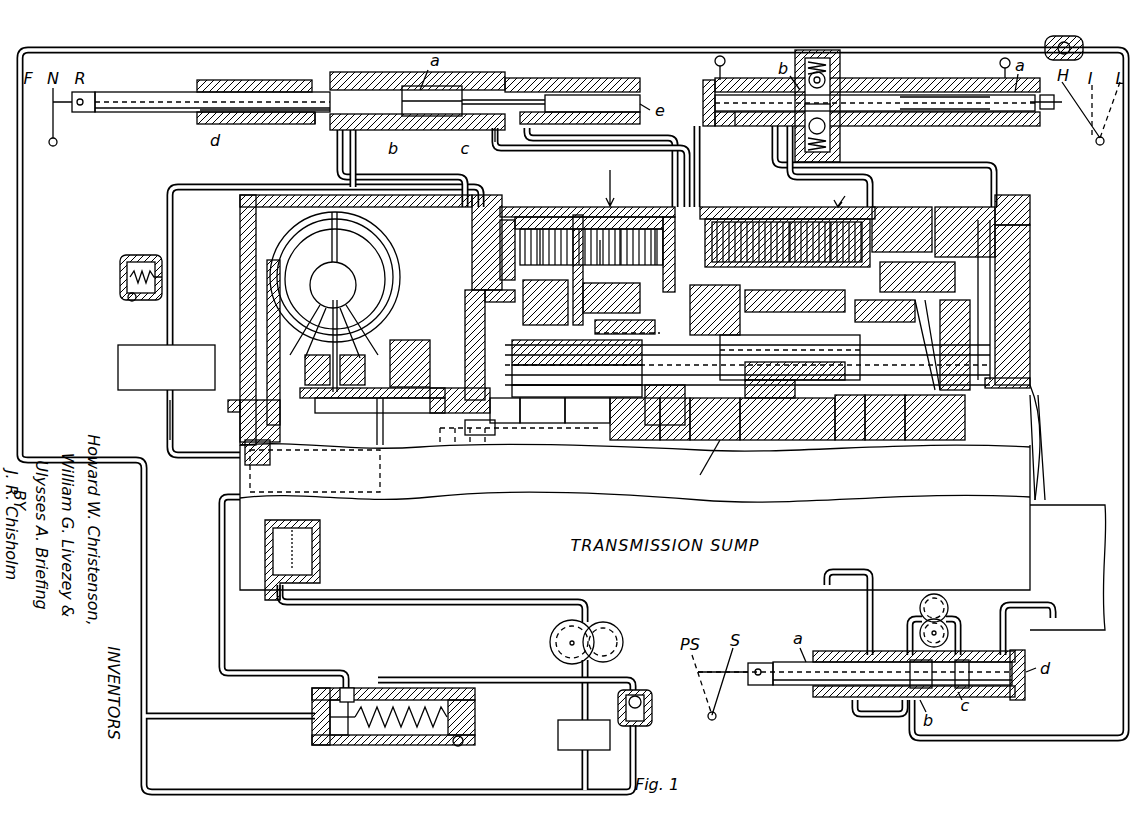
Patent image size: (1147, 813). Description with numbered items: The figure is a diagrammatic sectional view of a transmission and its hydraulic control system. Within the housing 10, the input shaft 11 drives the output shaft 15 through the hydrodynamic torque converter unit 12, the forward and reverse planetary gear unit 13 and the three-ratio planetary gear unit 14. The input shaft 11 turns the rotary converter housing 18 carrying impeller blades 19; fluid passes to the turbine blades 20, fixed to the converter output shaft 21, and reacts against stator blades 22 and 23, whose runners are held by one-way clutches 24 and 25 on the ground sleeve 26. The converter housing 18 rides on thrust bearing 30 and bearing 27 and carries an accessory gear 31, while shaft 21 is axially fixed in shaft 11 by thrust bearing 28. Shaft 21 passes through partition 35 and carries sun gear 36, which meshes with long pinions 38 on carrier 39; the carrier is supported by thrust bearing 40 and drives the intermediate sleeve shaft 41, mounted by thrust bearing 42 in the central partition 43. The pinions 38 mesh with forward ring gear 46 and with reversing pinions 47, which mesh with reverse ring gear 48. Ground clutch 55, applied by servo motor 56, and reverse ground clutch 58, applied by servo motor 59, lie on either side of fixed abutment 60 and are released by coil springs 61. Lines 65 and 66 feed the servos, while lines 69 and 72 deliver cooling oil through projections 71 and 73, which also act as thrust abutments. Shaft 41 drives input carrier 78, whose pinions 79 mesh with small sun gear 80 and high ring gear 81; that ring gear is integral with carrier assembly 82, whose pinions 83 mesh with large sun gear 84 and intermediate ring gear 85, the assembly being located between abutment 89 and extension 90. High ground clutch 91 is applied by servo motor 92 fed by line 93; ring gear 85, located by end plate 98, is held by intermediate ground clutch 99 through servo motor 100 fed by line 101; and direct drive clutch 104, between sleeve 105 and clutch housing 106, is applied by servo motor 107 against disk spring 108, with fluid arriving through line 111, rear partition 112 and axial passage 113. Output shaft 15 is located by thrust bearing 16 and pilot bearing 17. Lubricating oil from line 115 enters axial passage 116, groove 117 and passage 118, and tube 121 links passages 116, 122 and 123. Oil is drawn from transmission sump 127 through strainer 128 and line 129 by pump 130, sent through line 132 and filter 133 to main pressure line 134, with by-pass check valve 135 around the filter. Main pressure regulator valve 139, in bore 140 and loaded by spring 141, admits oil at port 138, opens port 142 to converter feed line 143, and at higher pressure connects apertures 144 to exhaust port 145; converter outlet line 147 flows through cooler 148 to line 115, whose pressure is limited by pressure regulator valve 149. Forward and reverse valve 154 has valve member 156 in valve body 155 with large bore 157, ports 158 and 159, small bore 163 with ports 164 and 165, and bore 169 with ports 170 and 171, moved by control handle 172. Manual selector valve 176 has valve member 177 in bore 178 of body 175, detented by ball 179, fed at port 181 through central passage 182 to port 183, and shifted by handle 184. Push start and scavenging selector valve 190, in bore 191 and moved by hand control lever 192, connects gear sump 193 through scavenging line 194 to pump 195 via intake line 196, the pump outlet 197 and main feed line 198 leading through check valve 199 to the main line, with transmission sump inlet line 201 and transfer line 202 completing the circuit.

The housing 10 is at (238, 250).
The input shaft 11 is at (240, 428).
The hydrodynamic torque converter unit 12 is at (385, 250).
The forward and reverse planetary gear unit 13 is at (612, 180).
The three-ratio planetary gear unit 14 is at (849, 195).
The output shaft 15 is at (1042, 392).
The thrust bearing 16 is at (1028, 380).
The pilot bearing 17 is at (713, 467).
The rotary torque converter housing 18 is at (300, 235).
The impeller blades 19 is at (390, 258).
The turbine blades 20 is at (276, 285).
The torque converter output shaft 21 is at (318, 450).
The stator blades 22 is at (308, 330).
The stator blades 23 is at (358, 330).
The one-way clutch 24 is at (308, 385).
The one-way clutch 25 is at (362, 385).
The ground sleeve 26 is at (325, 400).
The bearing 27 is at (226, 405).
The thrust bearing 28 is at (257, 460).
The thrust bearing 30 is at (400, 405).
The gear 31 is at (412, 340).
The partition 35 is at (470, 270).
The sun gear 36 is at (520, 425).
The long planetary pinions 38 is at (482, 435).
The carrier 39 is at (560, 425).
The thrust bearing 40 is at (470, 390).
The intermediate sleeve shaft 41 is at (595, 425).
The thrust bearing 42 is at (665, 405).
The central partition 43 is at (630, 375).
The forward ring gear 46 is at (520, 340).
The reversing planetary pinions 47 is at (635, 336).
The reverse ring gear 48 is at (575, 298).
The multiple plate ground clutch 55 is at (580, 218).
The servo motor 56 is at (512, 208).
The reverse ground clutch 58 is at (620, 218).
The servo motor 59 is at (658, 218).
The fixed abutment 60 is at (600, 210).
The coil springs 61 is at (545, 218).
The line 65 is at (336, 168).
The line 66 is at (684, 165).
The line 69 is at (428, 118).
The projection 71 is at (508, 305).
The line 72 is at (523, 140).
The projection 73 is at (624, 306).
The input carrier 78 is at (730, 375).
The planetary pinions 79 is at (790, 357).
The small sun gear 80 is at (725, 445).
The high ring gear 81 is at (740, 330).
The carrier assembly 82 is at (805, 375).
The planetary pinion 83 is at (862, 375).
The large sun gear 84 is at (830, 435).
The intermediate ring gear 85 is at (862, 312).
The fixed annular abutment 89 is at (788, 218).
The annular lateral extension 90 is at (730, 295).
The high ground clutch 91 is at (758, 218).
The servo motor 92 is at (722, 210).
The line 93 is at (725, 152).
The end plate 98 is at (870, 322).
The intermediate ground clutch 99 is at (828, 218).
The servo motor 100 is at (870, 205).
The line 101 is at (880, 180).
The direct drive clutch 104 is at (940, 220).
The sleeve 105 is at (915, 290).
The clutch housing 106 is at (998, 205).
The servo motor 107 is at (935, 417).
The annular disk spring 108 is at (885, 417).
The line 111 is at (922, 166).
The rear partition 112 is at (1030, 280).
The axial passage 113 is at (978, 435).
The line 115 is at (166, 224).
The axial passage 116 is at (462, 455).
The annular groove 117 is at (478, 455).
The passage 118 is at (615, 400).
The tube 121 is at (640, 442).
The passage 122 is at (690, 442).
The passage 123 is at (790, 445).
The transmission sump 127 is at (362, 590).
The sump strainer 128 is at (322, 558).
The line 129 is at (420, 606).
The pump 130 is at (608, 628).
The line 132 is at (582, 705).
The filter 133 is at (566, 750).
The main pressure line 134 is at (24, 162).
The by-pass check valve 135 is at (638, 694).
The port 138 is at (312, 728).
The main pressure regulator valve 139 is at (335, 738).
The bore 140 is at (420, 745).
The spring 141 is at (455, 700).
The port 142 is at (350, 690).
The converter feed line 143 is at (218, 562).
The apertures 144 is at (380, 738).
The exhaust port 145 is at (464, 744).
The converter outlet line 147 is at (166, 415).
The cooler 148 is at (116, 375).
The pressure regulator valve 149 is at (118, 298).
The forward and reverse valve 154 is at (165, 82).
The valve body 155 is at (225, 114).
The valve member 156 is at (135, 112).
The large diameter bore 157 is at (345, 85).
The elongated port 158 is at (356, 138).
The elongated port 159 is at (498, 136).
The small diameter bore 163 is at (265, 90).
The port 164 is at (330, 120).
The port 165 is at (290, 124).
The bore 169 is at (605, 90).
The port 170 is at (520, 82).
The port 171 is at (562, 88).
The control handle 172 is at (58, 125).
The body 175 is at (706, 84).
The manual selector valve 176 is at (1020, 132).
The valve member 177 is at (965, 112).
The bore 178 is at (920, 112).
The ball 179 is at (832, 70).
The port 181 is at (960, 88).
The central passage 182 is at (845, 120).
The connecting port portion 183 is at (732, 126).
The handle 184 is at (1080, 130).
The push start and scavenging selector valve 190 is at (784, 688).
The bore 191 is at (842, 698).
The hand control lever 192 is at (708, 690).
The gear sump 193 is at (1028, 556).
The sump scavenging line 194 is at (1050, 602).
The push start and scavenging pump 195 is at (936, 598).
The intake line 196 is at (960, 628).
The outlet 197 is at (916, 626).
The main feed line 198 is at (962, 742).
The check valve 199 is at (1085, 46).
The transmission sump inlet line 201 is at (866, 612).
The transfer line 202 is at (878, 716).